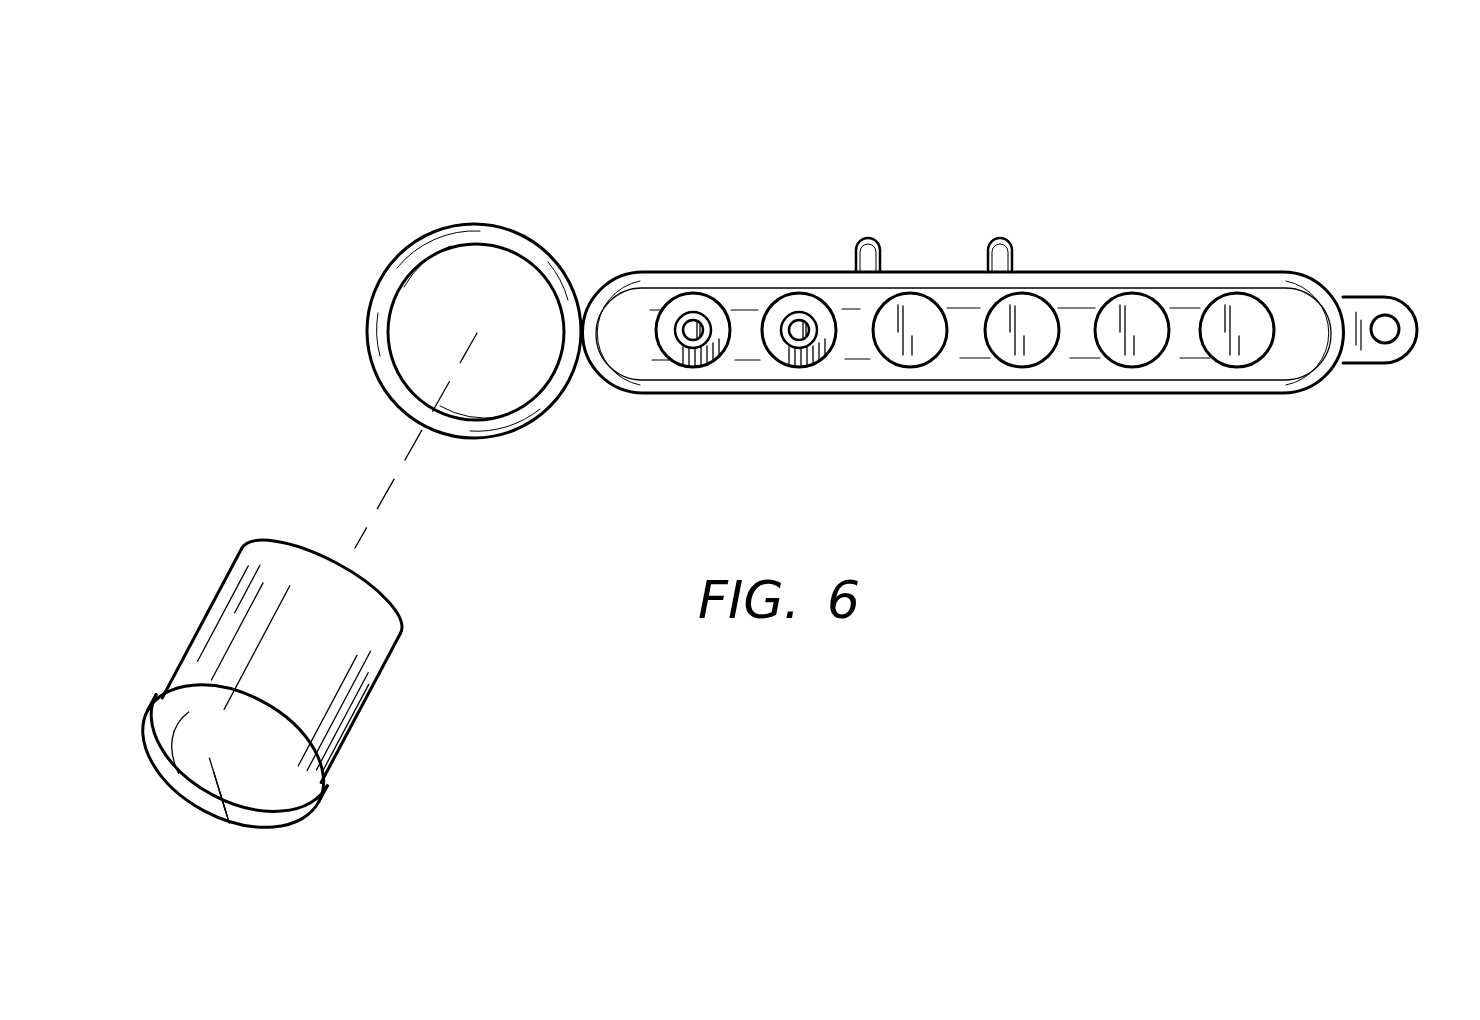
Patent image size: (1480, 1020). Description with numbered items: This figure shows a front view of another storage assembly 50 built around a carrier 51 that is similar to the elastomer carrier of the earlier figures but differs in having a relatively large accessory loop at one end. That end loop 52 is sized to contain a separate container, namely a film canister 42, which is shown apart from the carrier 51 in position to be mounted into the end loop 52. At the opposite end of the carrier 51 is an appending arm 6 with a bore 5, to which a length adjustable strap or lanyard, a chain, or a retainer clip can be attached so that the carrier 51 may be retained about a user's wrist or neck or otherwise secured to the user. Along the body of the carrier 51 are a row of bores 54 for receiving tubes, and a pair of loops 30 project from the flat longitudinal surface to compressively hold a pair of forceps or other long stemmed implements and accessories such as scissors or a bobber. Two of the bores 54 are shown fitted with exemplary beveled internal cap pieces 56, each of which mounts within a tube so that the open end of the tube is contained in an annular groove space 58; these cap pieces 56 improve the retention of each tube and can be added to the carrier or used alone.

The bore 5 is at (1399, 329).
The appending arm 6 is at (1400, 298).
The loops 30 is at (879, 242).
The film canister 42 is at (392, 654).
The assembly 50 is at (1225, 150).
The carrier 51 is at (1308, 412).
The end loop 52 is at (410, 242).
The bores 54 is at (703, 365).
The cap pieces 56 is at (698, 322).
The annular groove space 58 is at (672, 312).